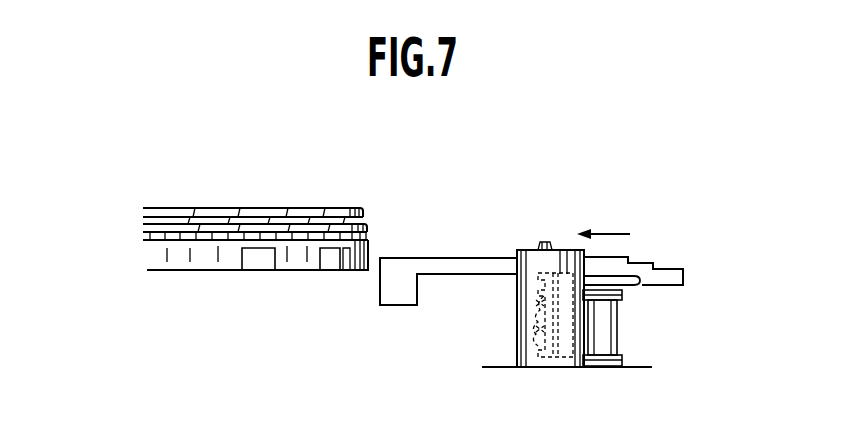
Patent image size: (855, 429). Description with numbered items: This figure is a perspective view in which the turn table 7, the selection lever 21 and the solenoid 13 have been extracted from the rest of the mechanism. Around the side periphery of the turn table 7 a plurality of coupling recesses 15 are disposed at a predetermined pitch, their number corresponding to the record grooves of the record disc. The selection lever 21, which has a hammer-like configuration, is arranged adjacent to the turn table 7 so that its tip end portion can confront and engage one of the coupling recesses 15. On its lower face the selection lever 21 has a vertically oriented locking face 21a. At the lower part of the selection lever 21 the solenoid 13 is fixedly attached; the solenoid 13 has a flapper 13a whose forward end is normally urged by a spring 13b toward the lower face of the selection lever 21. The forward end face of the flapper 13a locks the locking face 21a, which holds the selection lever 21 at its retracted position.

The turn table 7 is at (332, 207).
The coupling recesses 15 is at (258, 263).
The selection lever 21 is at (448, 257).
The locking face 21a is at (638, 278).
The solenoid 13 is at (605, 344).
The flapper 13a is at (620, 281).
The spring 13b is at (527, 307).